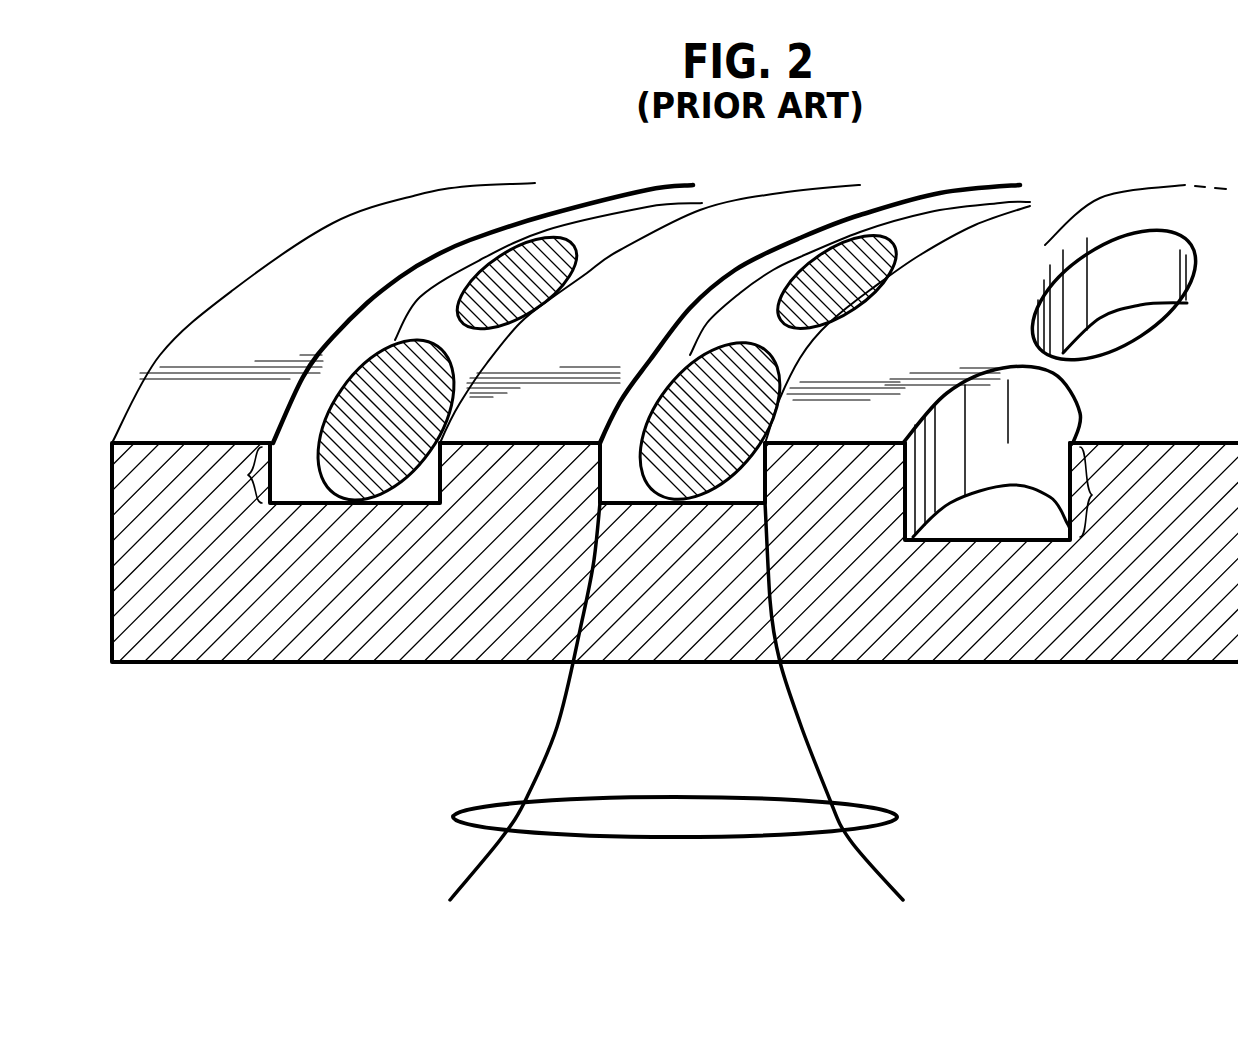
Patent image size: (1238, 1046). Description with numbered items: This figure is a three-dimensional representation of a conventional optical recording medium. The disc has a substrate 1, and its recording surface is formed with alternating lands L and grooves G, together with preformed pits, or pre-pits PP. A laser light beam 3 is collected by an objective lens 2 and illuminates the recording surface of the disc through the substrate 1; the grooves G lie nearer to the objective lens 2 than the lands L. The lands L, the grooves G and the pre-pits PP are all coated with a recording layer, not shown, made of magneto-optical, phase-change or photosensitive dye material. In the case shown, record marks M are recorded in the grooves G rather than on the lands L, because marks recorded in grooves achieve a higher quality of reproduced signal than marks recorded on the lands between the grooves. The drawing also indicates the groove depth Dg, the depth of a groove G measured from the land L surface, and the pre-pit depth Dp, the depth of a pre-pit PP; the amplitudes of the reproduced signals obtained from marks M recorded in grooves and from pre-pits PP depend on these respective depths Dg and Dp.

The substrate 1 is at (233, 643).
The objective lens 2 is at (480, 819).
The laser light beam 3 is at (573, 731).
The land L is at (669, 336).
The groove G is at (645, 363).
The record mark M is at (661, 353).
The pre-pit PP is at (1060, 372).
The groove depth Dg is at (232, 475).
The pre-pit depth Dp is at (1108, 492).